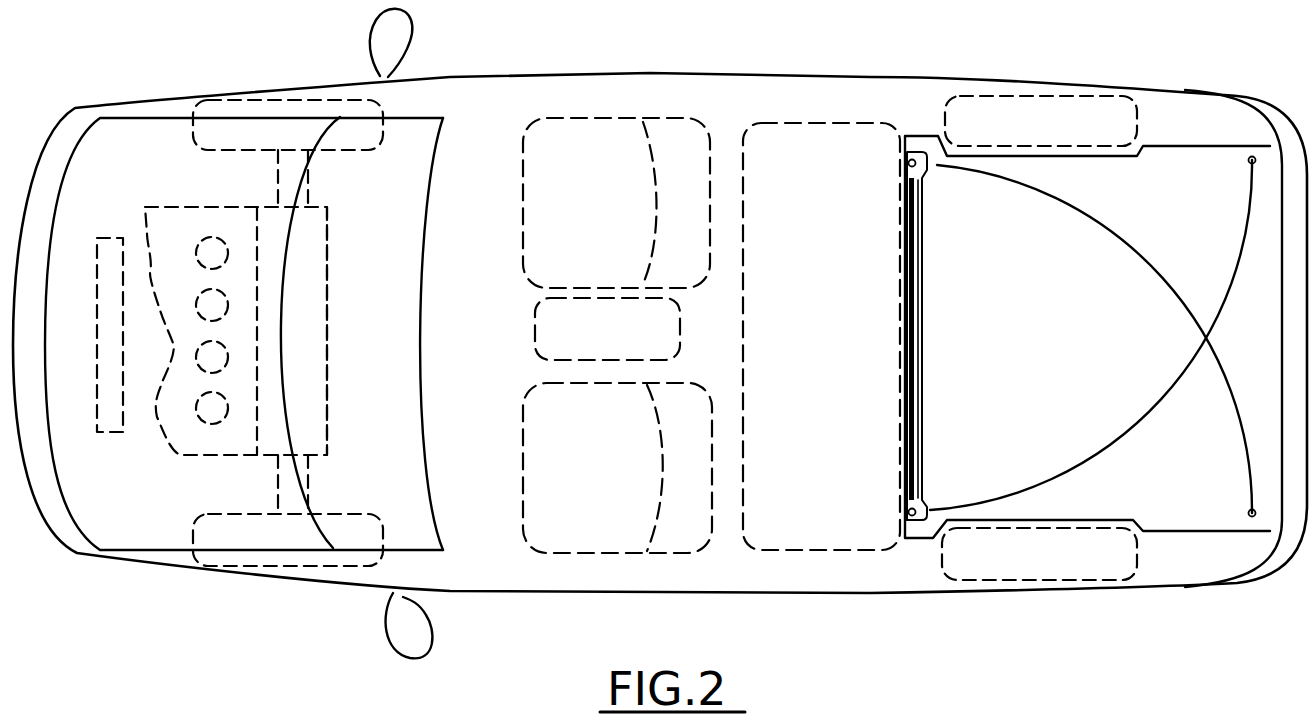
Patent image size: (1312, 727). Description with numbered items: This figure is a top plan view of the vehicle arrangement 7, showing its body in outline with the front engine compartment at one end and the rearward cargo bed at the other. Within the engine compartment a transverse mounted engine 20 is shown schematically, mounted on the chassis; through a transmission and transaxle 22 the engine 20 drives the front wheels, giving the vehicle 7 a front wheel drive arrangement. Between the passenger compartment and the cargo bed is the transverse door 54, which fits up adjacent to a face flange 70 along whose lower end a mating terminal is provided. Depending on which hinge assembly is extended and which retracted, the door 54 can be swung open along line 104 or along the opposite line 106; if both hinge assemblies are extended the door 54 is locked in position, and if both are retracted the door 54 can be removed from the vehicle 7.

The vehicle arrangement 7 is at (666, 50).
The engine 20 is at (182, 207).
The transmission and transaxle 22 is at (323, 332).
The transverse door 54 is at (925, 170).
The face flange 70 is at (907, 530).
The line 104 is at (1117, 233).
The line 106 is at (1133, 437).